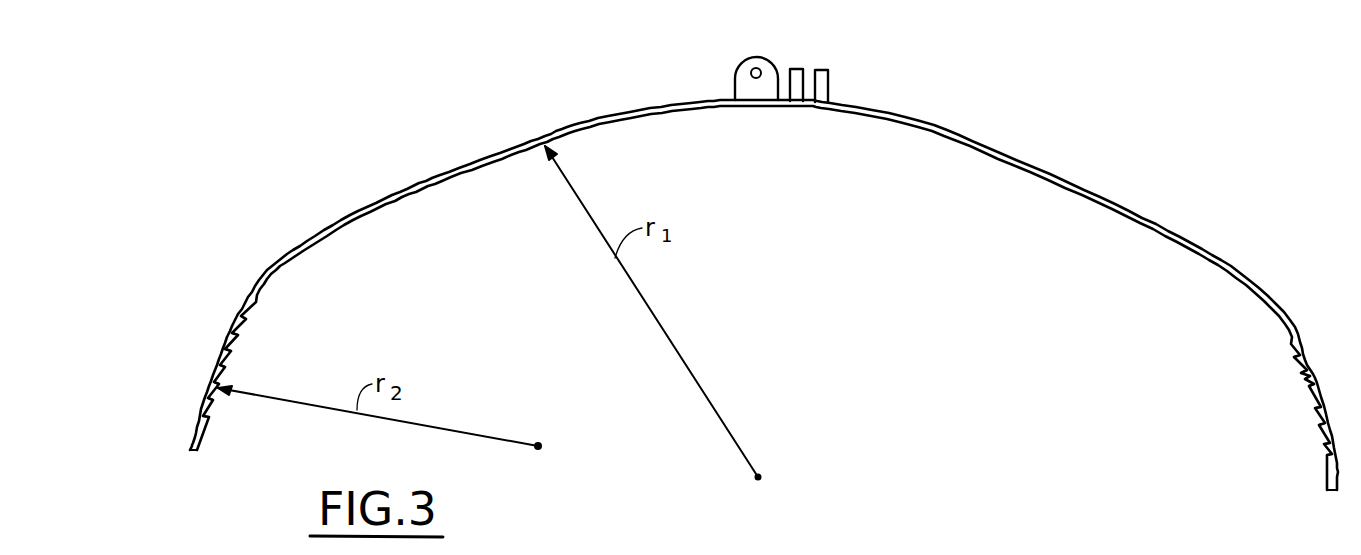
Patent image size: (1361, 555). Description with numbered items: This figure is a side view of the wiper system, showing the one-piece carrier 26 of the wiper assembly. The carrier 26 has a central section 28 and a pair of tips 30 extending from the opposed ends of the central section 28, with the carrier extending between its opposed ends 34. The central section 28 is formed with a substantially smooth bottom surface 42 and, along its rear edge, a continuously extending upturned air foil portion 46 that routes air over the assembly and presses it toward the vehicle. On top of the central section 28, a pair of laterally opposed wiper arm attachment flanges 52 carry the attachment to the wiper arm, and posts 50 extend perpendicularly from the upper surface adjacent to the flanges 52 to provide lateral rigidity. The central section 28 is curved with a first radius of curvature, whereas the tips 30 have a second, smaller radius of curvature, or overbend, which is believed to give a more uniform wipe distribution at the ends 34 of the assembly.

The carrier 26 is at (729, 270).
The central section 28 is at (764, 295).
The tips 30 is at (229, 350).
The opposed ends 34 is at (190, 448).
The bottom surface 42 is at (1117, 213).
The upturned air foil portion 46 is at (1031, 161).
The posts 50 is at (825, 70).
The wiper arm attachment flanges 52 is at (734, 72).